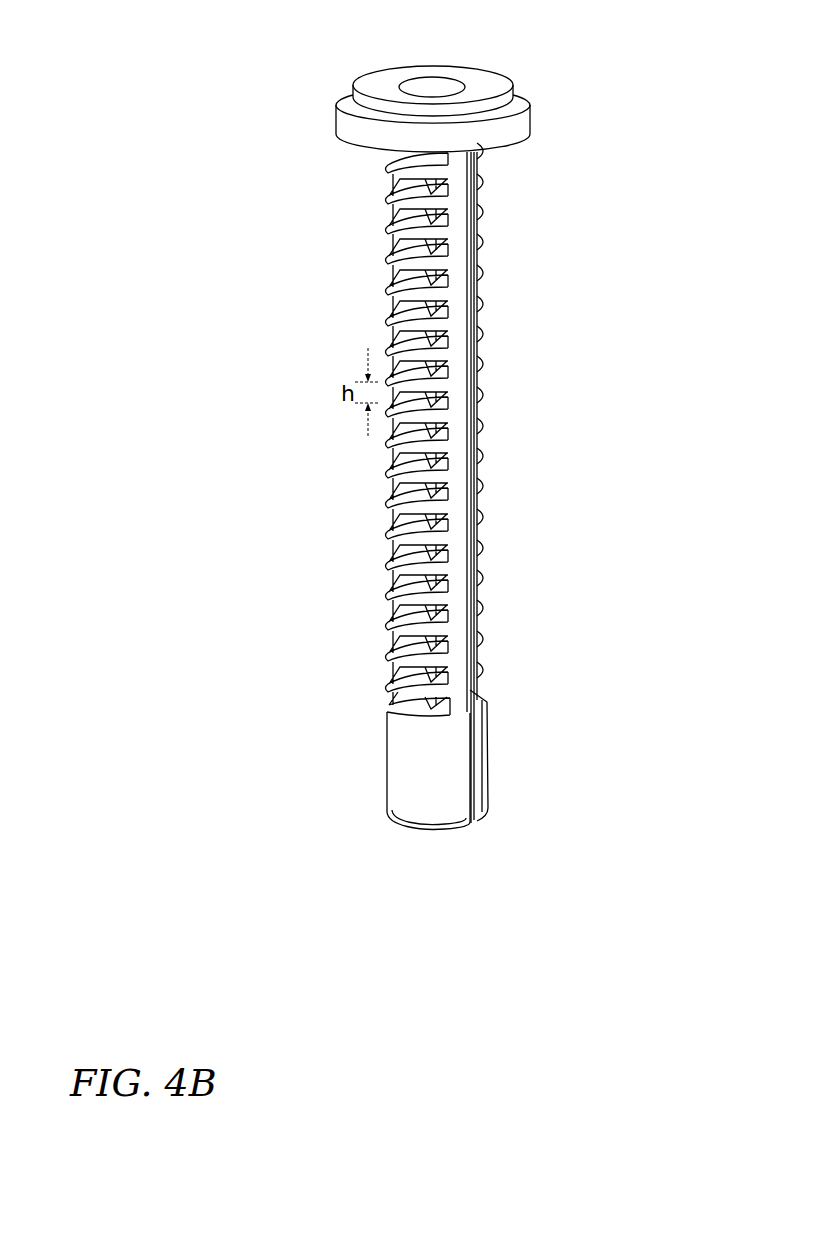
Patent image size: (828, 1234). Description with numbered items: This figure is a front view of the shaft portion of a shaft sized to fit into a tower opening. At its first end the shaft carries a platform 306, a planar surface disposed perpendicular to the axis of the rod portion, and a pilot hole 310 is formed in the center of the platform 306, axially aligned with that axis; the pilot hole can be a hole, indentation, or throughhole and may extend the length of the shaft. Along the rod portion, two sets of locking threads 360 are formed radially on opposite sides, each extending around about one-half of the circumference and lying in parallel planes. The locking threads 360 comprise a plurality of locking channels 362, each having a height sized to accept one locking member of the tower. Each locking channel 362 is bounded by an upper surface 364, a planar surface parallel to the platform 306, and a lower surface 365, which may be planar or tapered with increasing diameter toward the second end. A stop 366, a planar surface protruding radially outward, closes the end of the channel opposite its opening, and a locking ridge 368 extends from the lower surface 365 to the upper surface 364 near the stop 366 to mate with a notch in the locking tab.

The platform 306 is at (495, 83).
The pilot hole 310 is at (428, 92).
The locking threads 360 is at (387, 532).
The locking channel 362 is at (392, 248).
The upper surface 364 is at (390, 243).
The lower surface 365 is at (393, 254).
The stop 366 is at (443, 260).
The locking ridge 368 is at (455, 253).